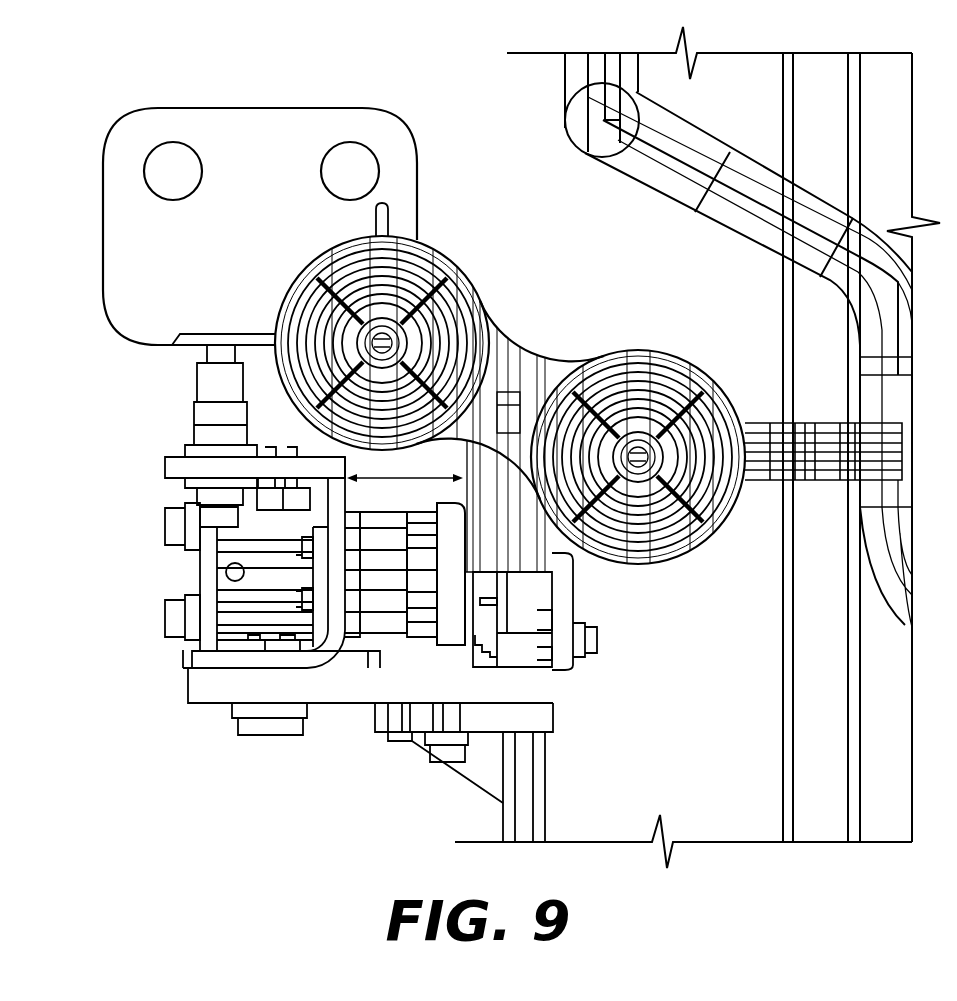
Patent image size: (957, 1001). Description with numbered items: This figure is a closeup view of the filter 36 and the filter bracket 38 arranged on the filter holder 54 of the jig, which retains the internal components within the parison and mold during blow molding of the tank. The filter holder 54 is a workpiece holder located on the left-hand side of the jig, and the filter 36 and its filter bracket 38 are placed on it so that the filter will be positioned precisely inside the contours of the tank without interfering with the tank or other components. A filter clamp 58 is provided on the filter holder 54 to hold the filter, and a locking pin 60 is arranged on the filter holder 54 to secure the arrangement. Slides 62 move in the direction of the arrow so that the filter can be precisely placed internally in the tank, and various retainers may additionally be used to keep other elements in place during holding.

The filter 36 is at (495, 322).
The filter bracket 38 is at (296, 123).
The filter holder 54 is at (120, 546).
The filter clamp 58 is at (461, 580).
The locking pin 60 is at (520, 650).
The slides 62 is at (405, 625).